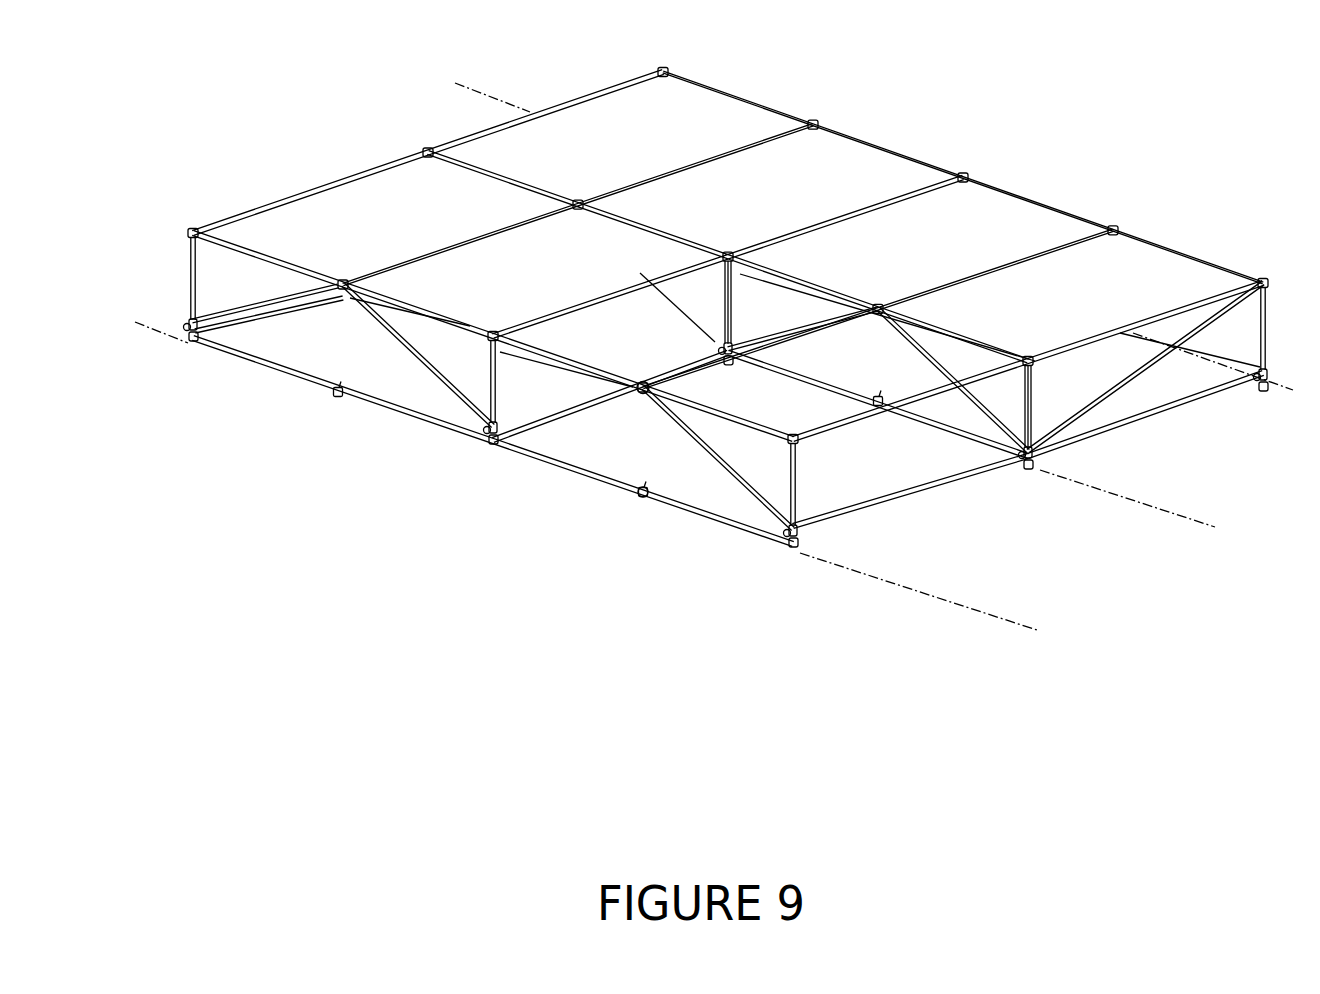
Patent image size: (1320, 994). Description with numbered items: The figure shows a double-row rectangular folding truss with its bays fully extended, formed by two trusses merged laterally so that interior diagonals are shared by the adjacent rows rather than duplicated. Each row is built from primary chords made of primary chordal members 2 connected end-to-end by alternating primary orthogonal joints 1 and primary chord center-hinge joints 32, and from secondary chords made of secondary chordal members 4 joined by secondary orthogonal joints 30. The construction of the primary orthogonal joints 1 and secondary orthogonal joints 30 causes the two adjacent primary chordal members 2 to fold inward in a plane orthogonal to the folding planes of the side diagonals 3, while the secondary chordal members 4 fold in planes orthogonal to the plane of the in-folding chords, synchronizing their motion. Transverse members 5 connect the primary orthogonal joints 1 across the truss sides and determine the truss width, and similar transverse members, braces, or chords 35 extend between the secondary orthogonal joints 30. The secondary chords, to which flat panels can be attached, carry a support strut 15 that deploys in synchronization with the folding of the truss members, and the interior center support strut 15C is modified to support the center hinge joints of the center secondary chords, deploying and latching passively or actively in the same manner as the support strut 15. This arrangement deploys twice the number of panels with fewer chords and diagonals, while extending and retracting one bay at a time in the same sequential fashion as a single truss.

The primary orthogonal joint 1 is at (480, 437).
The primary chordal member 2 is at (553, 465).
The side diagonal 3 is at (363, 317).
The secondary chordal member 4 is at (413, 315).
The transverse member 5 is at (842, 520).
The support strut 15 is at (482, 430).
The interior center support strut 15C is at (650, 290).
The secondary orthogonal joint 30 is at (633, 395).
The primary chord center-hinge joint 32 is at (633, 497).
The transverse member, brace, or chord 35 is at (910, 345).